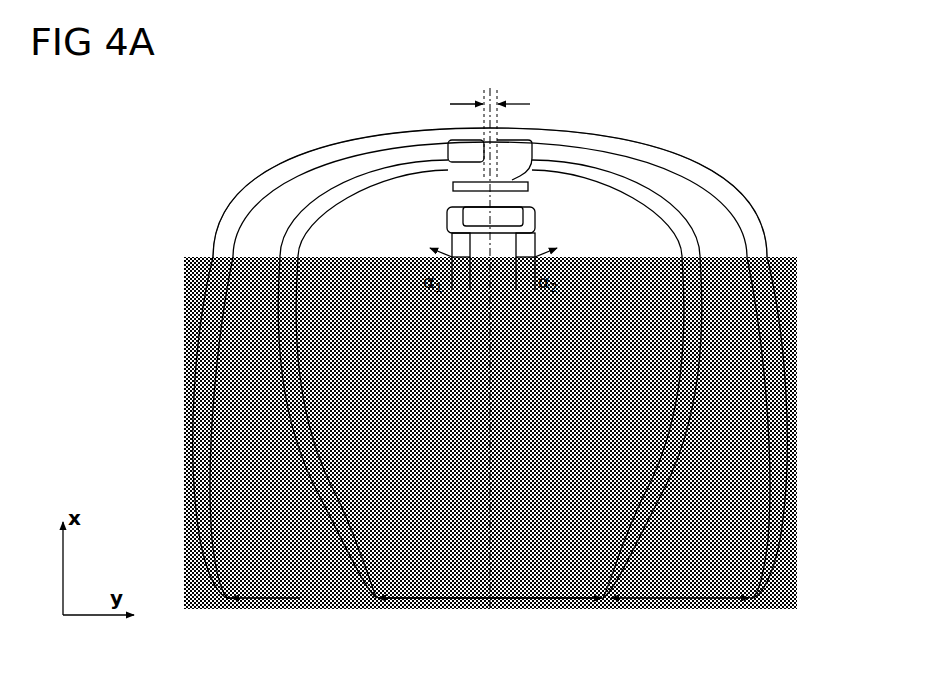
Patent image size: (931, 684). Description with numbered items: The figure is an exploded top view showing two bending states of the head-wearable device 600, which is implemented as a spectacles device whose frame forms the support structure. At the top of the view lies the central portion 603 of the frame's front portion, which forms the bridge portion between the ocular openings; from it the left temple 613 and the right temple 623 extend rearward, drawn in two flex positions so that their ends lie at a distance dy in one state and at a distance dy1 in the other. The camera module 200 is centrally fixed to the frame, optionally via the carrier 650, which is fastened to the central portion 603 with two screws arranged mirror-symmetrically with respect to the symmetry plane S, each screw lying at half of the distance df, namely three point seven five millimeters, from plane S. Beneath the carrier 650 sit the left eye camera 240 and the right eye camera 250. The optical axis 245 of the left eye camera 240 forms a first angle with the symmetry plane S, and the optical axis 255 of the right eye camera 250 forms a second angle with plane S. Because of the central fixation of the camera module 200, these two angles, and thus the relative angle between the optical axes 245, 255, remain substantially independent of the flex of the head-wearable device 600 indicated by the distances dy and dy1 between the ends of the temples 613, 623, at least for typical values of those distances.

The head-wearable device 600 is at (366, 127).
The central portion 603 is at (611, 117).
The left temple 613 is at (212, 205).
The right temple 623 is at (761, 206).
The carrier 650 is at (440, 190).
The camera module 200 is at (542, 218).
The left eye camera 240 is at (436, 232).
The right eye camera 250 is at (542, 232).
The optical axis of left eye camera 245 is at (417, 254).
The optical axis of right eye camera 255 is at (565, 254).
The symmetry plane S is at (436, 382).
The screw spacing distance df is at (493, 100).
The temple end distance dy is at (490, 619).
The temple end distance in second bending state dy1 is at (489, 583).